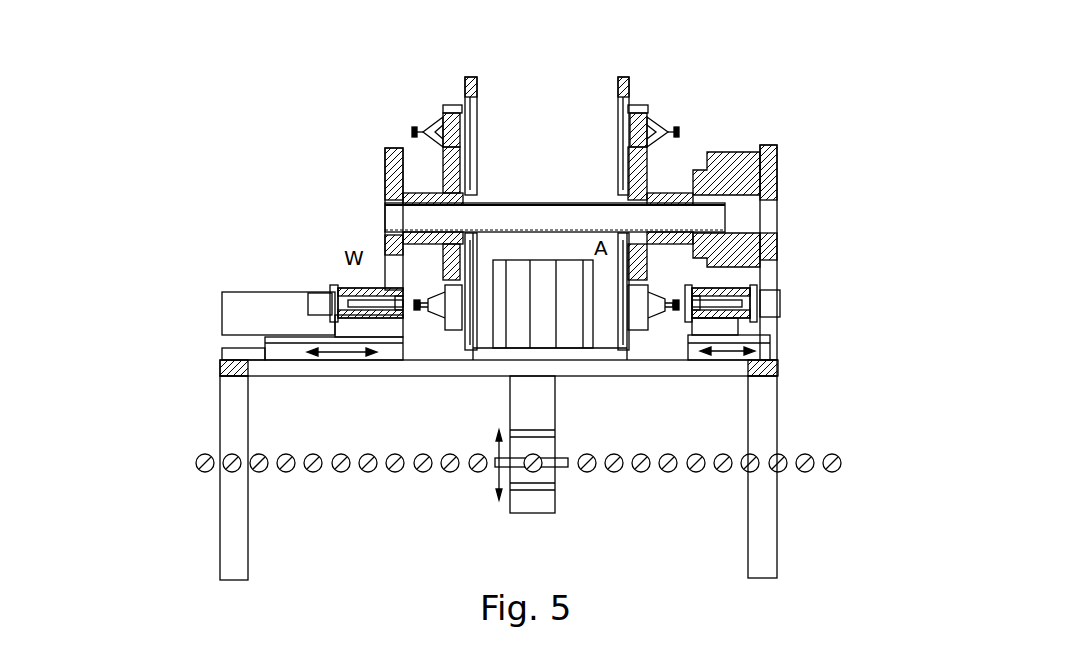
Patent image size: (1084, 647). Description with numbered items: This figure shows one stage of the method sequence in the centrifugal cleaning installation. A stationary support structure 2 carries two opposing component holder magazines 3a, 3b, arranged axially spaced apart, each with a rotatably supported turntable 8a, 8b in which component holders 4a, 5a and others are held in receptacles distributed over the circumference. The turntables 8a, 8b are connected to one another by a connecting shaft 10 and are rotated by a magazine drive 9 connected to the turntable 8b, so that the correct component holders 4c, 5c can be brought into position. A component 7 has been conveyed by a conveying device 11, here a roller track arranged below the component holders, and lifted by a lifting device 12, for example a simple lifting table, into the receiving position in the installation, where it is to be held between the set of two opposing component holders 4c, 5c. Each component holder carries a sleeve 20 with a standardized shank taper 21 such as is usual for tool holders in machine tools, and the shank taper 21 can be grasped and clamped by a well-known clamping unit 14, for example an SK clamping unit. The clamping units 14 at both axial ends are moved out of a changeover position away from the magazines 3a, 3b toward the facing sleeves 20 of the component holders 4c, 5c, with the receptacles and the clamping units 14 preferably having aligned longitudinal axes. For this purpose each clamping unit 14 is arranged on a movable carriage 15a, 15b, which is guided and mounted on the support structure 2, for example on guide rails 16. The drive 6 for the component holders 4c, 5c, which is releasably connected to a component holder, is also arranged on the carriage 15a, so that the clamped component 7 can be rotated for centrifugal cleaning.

The support structure 2 is at (758, 537).
The component holder magazine 3a is at (430, 92).
The component holder magazine 3b is at (665, 97).
The component holder 4a is at (470, 78).
The component holder 4c is at (469, 345).
The component holder 5a is at (622, 78).
The component holder 5c is at (624, 345).
The drive 6 is at (238, 310).
The component 7 is at (542, 290).
The turntable 8a is at (447, 178).
The turntable 8b is at (660, 173).
The magazine drive 9 is at (733, 183).
The connecting shaft 10 is at (494, 218).
The conveying device 11 is at (808, 452).
The lifting device 12 is at (548, 478).
The clamping unit 14 is at (320, 300).
The movable carriage 15a is at (290, 350).
The movable carriage 15b is at (770, 351).
The guide rails 16 is at (230, 352).
The sleeve 20 is at (452, 310).
The shank taper 21 is at (663, 310).